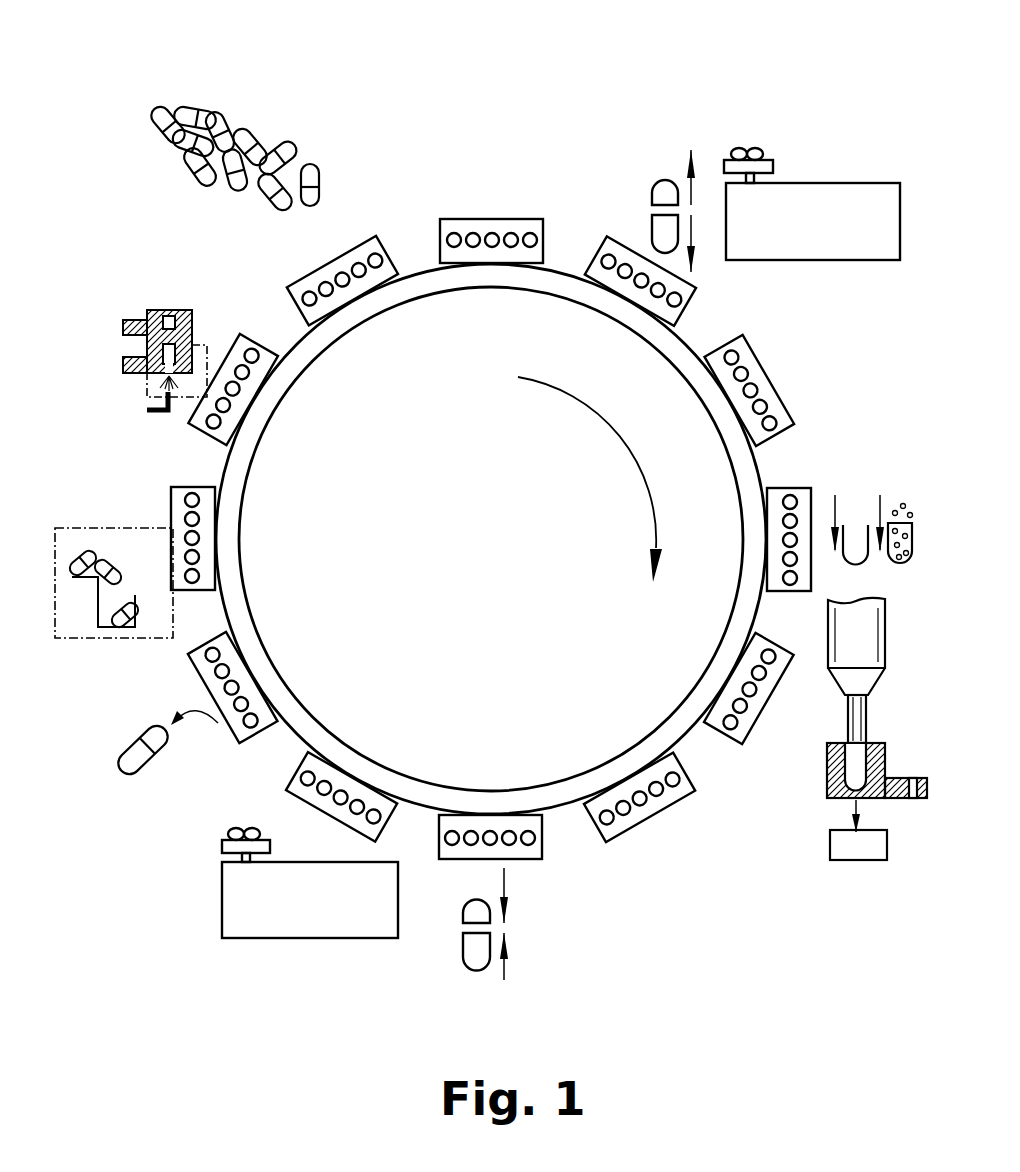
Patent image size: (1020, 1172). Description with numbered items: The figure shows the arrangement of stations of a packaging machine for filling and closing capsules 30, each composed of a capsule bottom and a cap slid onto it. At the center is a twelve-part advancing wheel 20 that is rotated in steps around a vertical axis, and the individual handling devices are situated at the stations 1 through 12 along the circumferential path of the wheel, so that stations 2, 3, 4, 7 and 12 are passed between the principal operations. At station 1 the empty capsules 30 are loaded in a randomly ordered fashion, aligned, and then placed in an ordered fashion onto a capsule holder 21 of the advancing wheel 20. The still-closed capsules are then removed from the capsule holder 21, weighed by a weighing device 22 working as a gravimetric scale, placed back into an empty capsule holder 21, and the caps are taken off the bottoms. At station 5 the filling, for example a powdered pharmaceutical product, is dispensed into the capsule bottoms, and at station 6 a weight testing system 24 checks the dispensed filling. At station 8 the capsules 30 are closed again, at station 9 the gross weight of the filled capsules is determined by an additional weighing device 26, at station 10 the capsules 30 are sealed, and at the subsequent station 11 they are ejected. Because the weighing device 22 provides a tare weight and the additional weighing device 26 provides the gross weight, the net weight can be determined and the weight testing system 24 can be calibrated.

The advancing wheel 20 is at (425, 325).
The capsule holder 21 is at (505, 218).
The weighing device 22 is at (829, 193).
The weight testing system 24 is at (827, 785).
The additional weighing device 26 is at (245, 907).
The capsules 30 is at (170, 118).
The station 1 is at (342, 302).
The station 2 is at (502, 237).
The station 3 is at (640, 302).
The station 4 is at (730, 391).
The station 5 is at (753, 539).
The station 6 is at (730, 687).
The station 7 is at (639, 775).
The station 8 is at (490, 798).
The station 9 is at (341, 775).
The station 10 is at (256, 686).
The station 11 is at (233, 538).
The station 12 is at (256, 390).